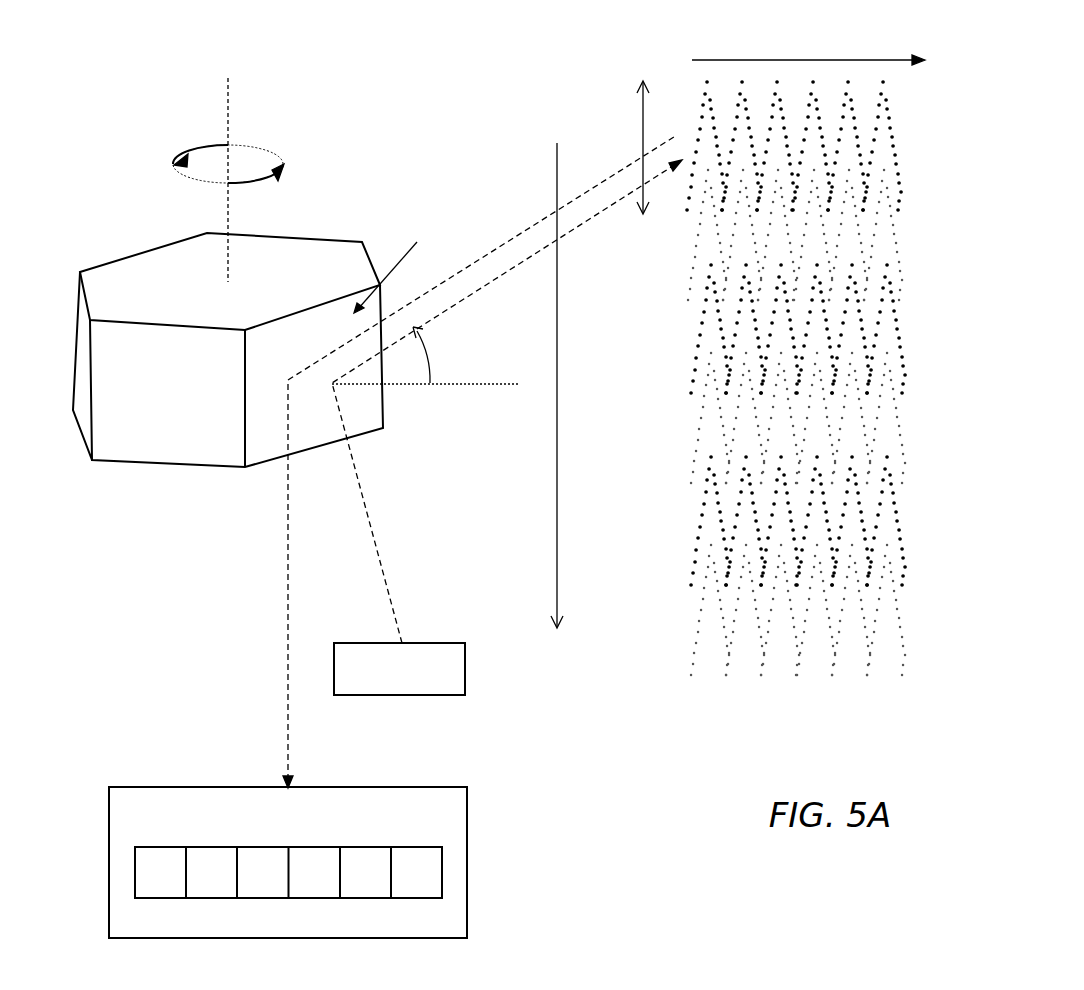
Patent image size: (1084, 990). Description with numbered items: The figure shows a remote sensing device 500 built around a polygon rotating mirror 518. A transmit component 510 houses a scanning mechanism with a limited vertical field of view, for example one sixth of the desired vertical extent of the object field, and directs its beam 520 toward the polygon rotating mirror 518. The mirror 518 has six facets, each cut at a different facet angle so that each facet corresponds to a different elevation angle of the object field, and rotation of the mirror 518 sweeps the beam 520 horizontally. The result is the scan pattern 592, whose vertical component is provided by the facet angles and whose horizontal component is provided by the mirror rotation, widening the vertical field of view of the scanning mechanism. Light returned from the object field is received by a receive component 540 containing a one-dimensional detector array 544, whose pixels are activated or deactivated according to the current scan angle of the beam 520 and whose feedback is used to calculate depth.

The remote sensing device 500 is at (75, 68).
The polygon rotating mirror 518 is at (146, 274).
The transmit (TX) component 510 is at (399, 669).
The beam 520 is at (507, 401).
The receive (RX) component 540 is at (288, 862).
The detector array 544 is at (288, 884).
The scan pattern 592 is at (816, 399).